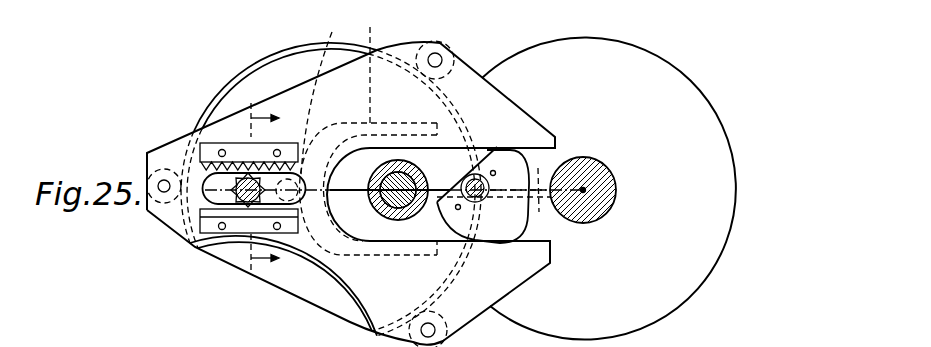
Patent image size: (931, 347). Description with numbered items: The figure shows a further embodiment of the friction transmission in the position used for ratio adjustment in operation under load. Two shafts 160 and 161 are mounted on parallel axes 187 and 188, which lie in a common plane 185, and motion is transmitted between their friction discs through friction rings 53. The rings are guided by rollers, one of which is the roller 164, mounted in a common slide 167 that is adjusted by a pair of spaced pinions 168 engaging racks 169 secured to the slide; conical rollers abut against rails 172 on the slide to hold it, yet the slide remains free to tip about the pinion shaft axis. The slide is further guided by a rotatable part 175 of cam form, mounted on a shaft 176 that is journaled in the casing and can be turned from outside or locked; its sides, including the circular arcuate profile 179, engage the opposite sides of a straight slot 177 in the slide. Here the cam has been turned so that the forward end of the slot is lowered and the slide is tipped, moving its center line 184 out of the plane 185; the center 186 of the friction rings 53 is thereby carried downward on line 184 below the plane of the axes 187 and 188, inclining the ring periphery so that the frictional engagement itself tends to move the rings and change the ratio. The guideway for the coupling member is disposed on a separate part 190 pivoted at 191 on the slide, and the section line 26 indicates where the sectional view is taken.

The section line 26- 26 is at (280, 189).
The friction rings 53 is at (261, 60).
The shaft 160 is at (405, 218).
The shaft 161 is at (603, 208).
The roller 164 is at (609, 170).
The slide 167 is at (474, 338).
The pinions 168 is at (232, 186).
The racks 169 is at (230, 147).
The rails 172 is at (187, 241).
The rotatable part 175 is at (532, 132).
The shaft 176 is at (477, 186).
The slot 177 is at (560, 153).
The circular arcuate profile 179 is at (530, 230).
The center line 184 is at (538, 211).
The plane 185 is at (505, 172).
The center 186 is at (331, 158).
The axis 187 is at (415, 171).
The axis 188 is at (586, 190).
The part 190 is at (369, 129).
The pivot 191 is at (331, 37).